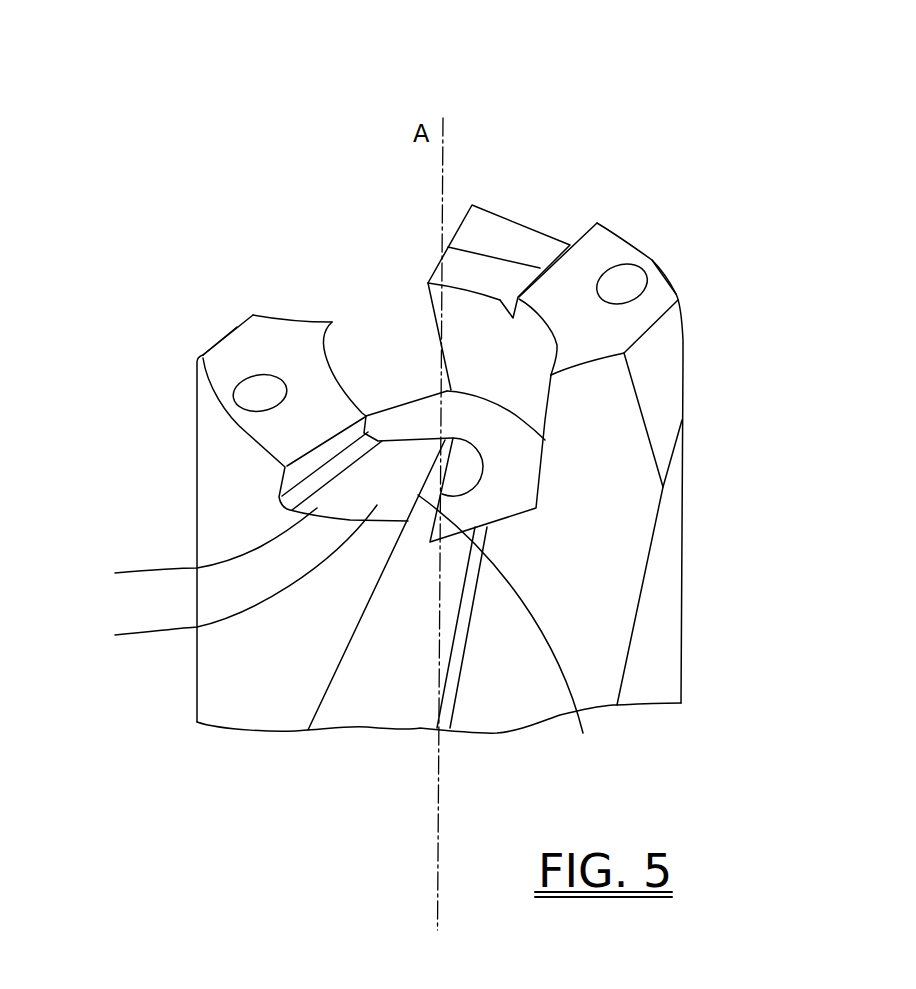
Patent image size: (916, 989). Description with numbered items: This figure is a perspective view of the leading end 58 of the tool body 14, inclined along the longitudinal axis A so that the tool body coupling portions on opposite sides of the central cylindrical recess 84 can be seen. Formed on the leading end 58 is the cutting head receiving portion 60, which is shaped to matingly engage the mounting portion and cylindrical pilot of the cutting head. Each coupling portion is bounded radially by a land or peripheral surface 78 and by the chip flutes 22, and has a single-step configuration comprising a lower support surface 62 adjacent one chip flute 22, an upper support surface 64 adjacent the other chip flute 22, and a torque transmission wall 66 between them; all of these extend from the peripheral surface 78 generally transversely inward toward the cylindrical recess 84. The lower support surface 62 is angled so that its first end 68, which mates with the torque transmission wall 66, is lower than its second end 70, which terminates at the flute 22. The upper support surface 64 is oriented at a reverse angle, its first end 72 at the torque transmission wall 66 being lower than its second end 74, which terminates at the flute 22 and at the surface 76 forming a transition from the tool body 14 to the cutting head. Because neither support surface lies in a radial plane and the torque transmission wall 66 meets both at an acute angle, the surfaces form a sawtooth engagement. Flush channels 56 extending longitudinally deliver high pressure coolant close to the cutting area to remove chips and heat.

The tool body 14 is at (541, 104).
The chip flutes 22 is at (593, 588).
The flush channels 56 is at (230, 380).
The leading end 58 is at (613, 232).
The cutting head receiving portion 60 is at (203, 357).
The lower support surface 62 is at (645, 118).
The upper support surface 64 is at (237, 327).
The torque transmission wall 66 is at (290, 477).
The first end of lower support surface 68 is at (194, 548).
The second end of lower support surface 70 is at (462, 233).
The first end of upper support surface 72 is at (448, 247).
The second end of upper support surface 74 is at (253, 347).
The transition surface 76 is at (668, 350).
The peripheral surface 78 is at (248, 670).
The cylindrical recess 84 is at (483, 357).